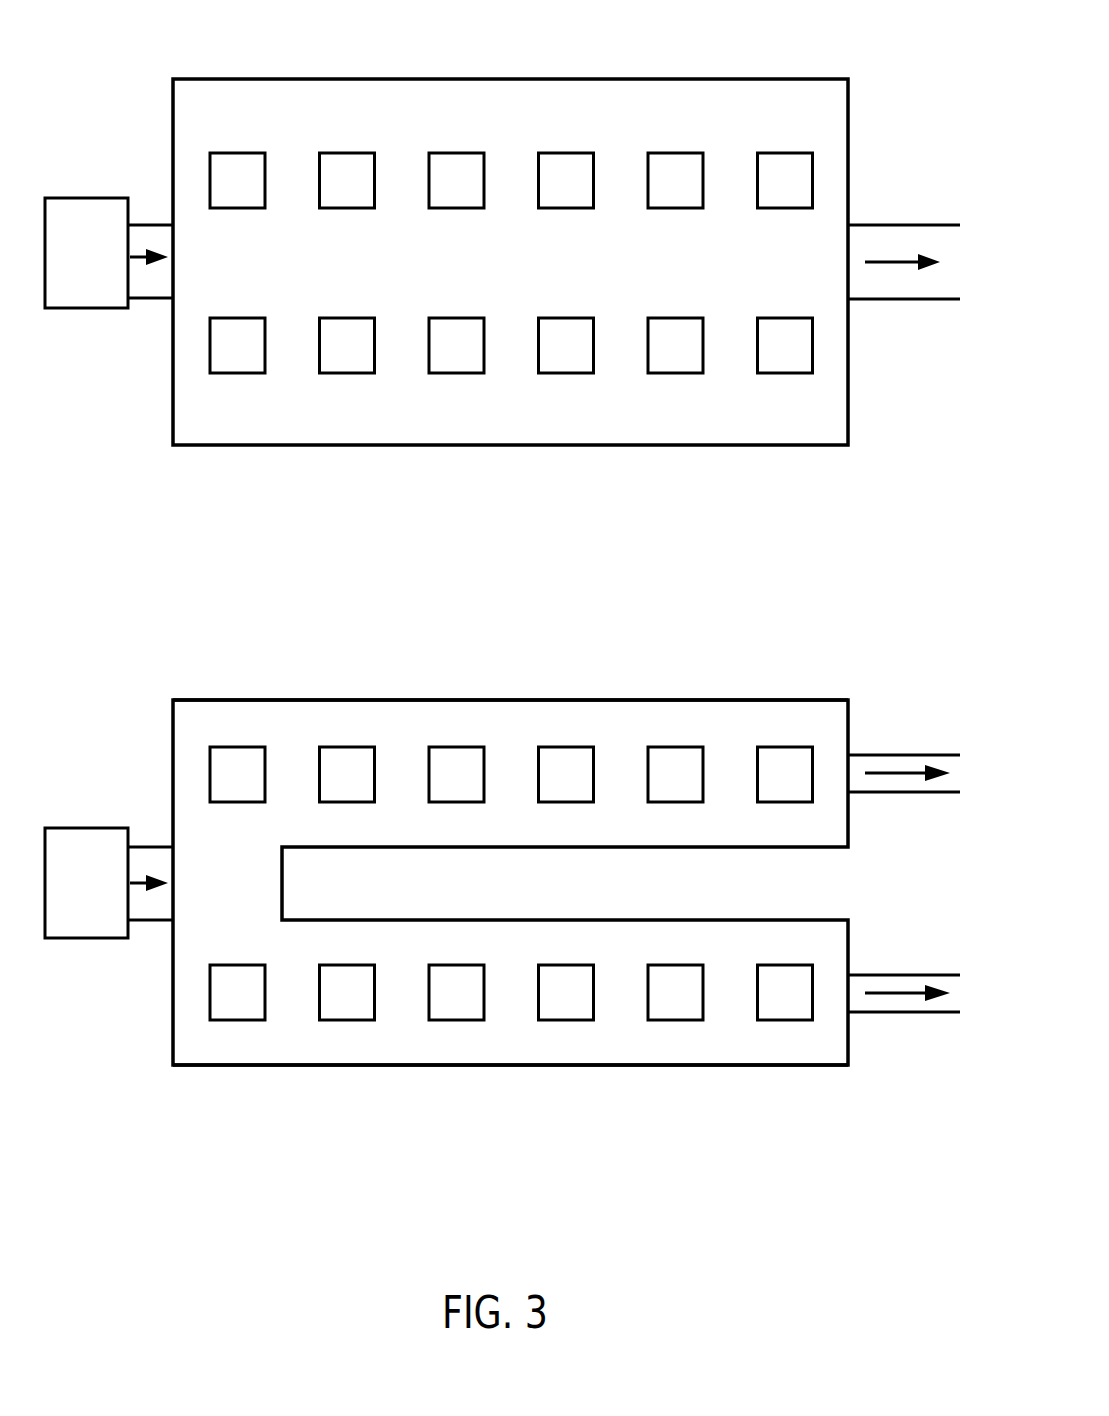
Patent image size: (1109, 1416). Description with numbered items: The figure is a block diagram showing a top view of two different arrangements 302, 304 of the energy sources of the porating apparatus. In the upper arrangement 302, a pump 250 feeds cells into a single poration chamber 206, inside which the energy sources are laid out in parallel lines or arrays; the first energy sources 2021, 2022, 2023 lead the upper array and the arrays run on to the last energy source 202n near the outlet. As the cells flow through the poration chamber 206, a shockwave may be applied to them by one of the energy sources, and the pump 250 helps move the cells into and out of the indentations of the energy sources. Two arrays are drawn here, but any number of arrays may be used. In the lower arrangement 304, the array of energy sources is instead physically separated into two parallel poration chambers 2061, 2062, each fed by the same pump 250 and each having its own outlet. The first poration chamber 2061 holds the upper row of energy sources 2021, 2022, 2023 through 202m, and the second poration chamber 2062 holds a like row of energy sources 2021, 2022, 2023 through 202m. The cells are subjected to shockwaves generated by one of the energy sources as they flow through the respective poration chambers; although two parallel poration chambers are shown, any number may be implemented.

The arrangement 302 is at (812, 45).
The arrangement 304 is at (812, 648).
The poration chamber 206 is at (263, 408).
The poration chamber 2061 is at (192, 720).
The poration chamber 2062 is at (193, 1055).
The pump 250 is at (82, 198).
The energy source 2021 is at (237, 153).
The energy source 2022 is at (345, 153).
The energy source 2023 is at (457, 153).
The energy source 202n is at (783, 372).
The energy source 202m is at (832, 1110).